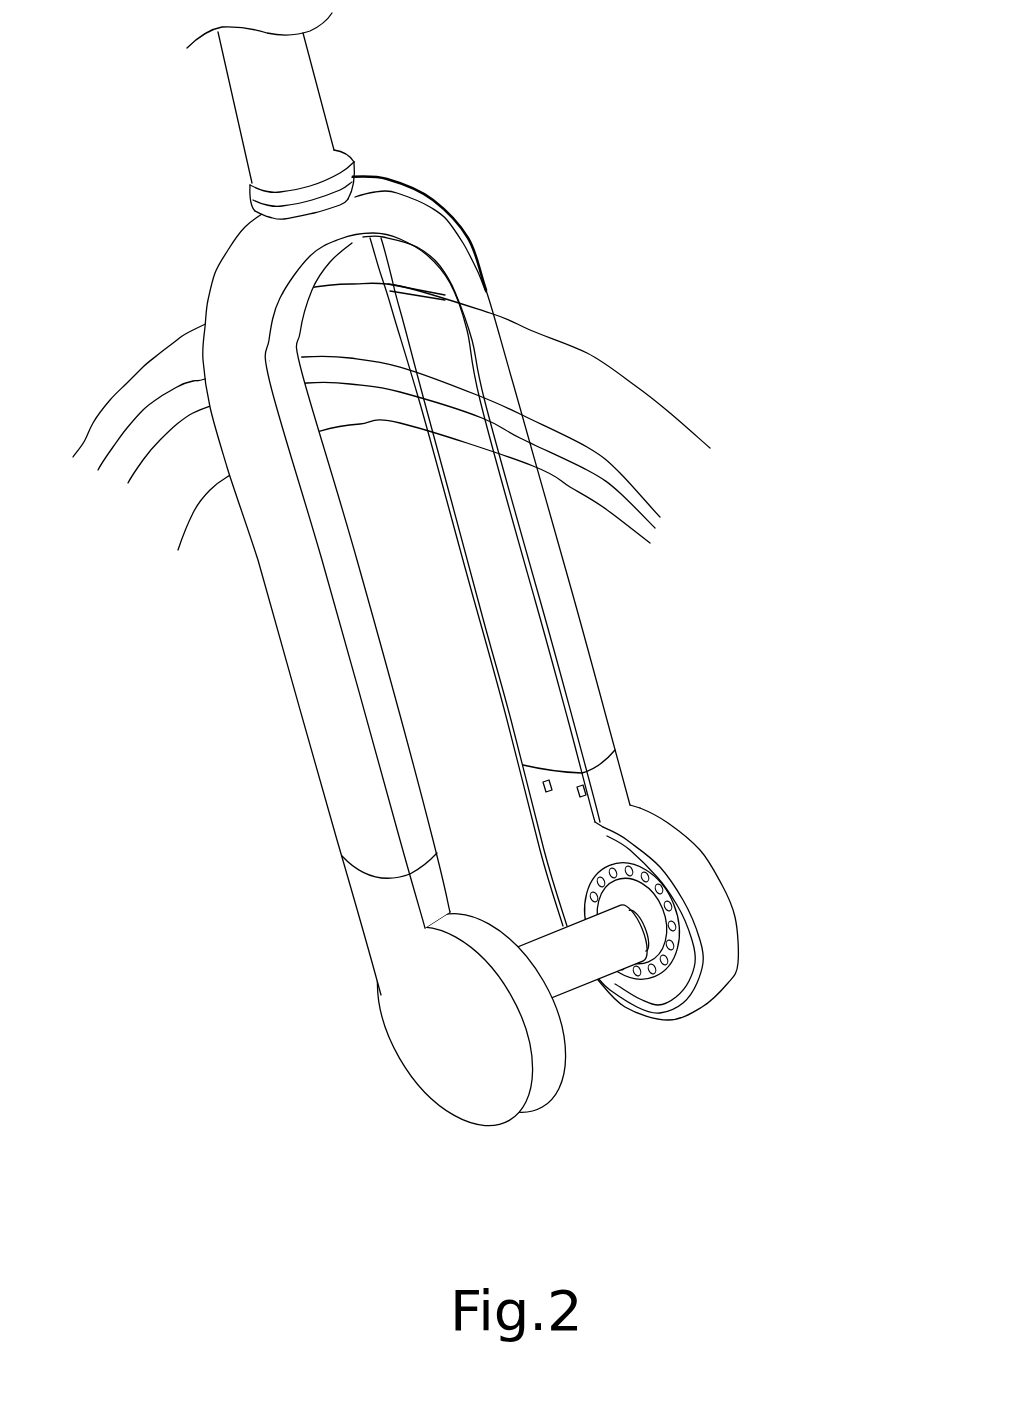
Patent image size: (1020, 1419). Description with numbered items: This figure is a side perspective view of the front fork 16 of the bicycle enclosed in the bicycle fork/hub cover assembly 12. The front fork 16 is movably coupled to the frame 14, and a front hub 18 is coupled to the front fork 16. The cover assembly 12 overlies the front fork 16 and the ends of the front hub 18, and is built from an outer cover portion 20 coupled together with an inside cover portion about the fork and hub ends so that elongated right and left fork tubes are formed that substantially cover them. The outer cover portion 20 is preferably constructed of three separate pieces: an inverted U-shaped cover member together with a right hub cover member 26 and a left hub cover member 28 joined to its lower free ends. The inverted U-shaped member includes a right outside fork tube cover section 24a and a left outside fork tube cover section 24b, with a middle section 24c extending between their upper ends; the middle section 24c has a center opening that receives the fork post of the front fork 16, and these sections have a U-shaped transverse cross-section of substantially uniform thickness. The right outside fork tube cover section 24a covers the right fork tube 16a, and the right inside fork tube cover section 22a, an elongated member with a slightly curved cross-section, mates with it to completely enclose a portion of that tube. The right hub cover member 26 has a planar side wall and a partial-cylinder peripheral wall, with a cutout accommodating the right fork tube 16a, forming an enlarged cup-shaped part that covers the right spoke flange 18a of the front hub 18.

The bicycle fork/hub cover assembly 12 is at (430, 535).
The frame 14 is at (320, 79).
The front fork 16 is at (410, 268).
The right fork tube 16a is at (573, 813).
The front hub 18 is at (585, 997).
The right spoke flange 18a is at (688, 947).
The outer cover portion 20 is at (331, 682).
The right inside fork tube cover section 22a is at (528, 672).
The right outside fork tube cover section 24a is at (583, 605).
The left outside fork tube cover section 24b is at (282, 595).
The middle section 24c is at (240, 242).
The right hub cover member 26 is at (733, 905).
The left hub cover member 28 is at (415, 1035).